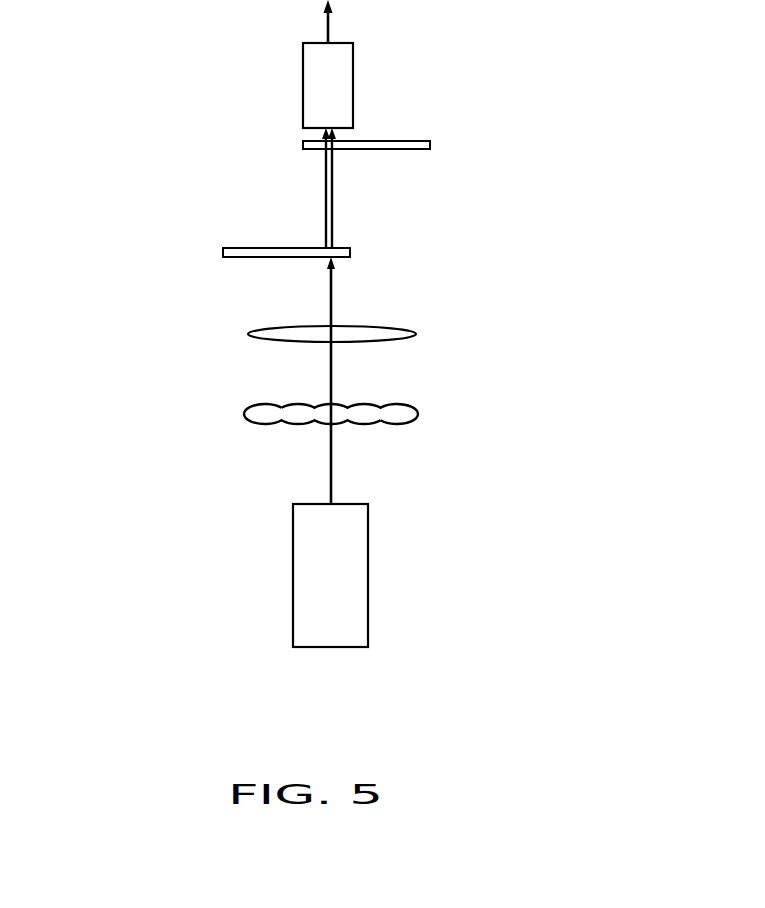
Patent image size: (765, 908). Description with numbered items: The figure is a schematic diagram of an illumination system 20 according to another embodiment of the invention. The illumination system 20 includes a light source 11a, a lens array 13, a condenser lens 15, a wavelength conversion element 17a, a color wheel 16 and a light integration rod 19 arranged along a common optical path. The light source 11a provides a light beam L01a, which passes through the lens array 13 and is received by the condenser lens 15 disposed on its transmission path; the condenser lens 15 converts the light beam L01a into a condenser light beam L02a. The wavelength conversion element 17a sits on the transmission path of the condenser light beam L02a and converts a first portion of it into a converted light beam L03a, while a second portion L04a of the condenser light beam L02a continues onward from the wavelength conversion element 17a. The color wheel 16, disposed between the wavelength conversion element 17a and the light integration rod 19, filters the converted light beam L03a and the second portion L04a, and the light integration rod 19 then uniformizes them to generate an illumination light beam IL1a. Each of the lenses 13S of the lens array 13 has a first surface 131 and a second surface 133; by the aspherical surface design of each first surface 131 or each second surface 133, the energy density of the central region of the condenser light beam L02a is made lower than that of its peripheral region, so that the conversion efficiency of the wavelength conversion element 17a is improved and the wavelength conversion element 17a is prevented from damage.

The illumination system 20 is at (108, 54).
The illumination light beam IL1a is at (331, 23).
The light integration rod 19 is at (353, 68).
The color wheel 16 is at (412, 141).
The converted light beam L03a is at (324, 189).
The second portion of the condenser light beam L04a is at (334, 210).
The wavelength conversion element 17a is at (223, 252).
The condenser light beam L02a is at (333, 293).
The condenser lens 15 is at (254, 332).
The lens array 13 is at (282, 421).
The second surface 133 is at (255, 400).
The first surface 131 is at (253, 427).
The lens 13S is at (273, 422).
The light beam L01a is at (333, 475).
The light source 11a is at (369, 573).